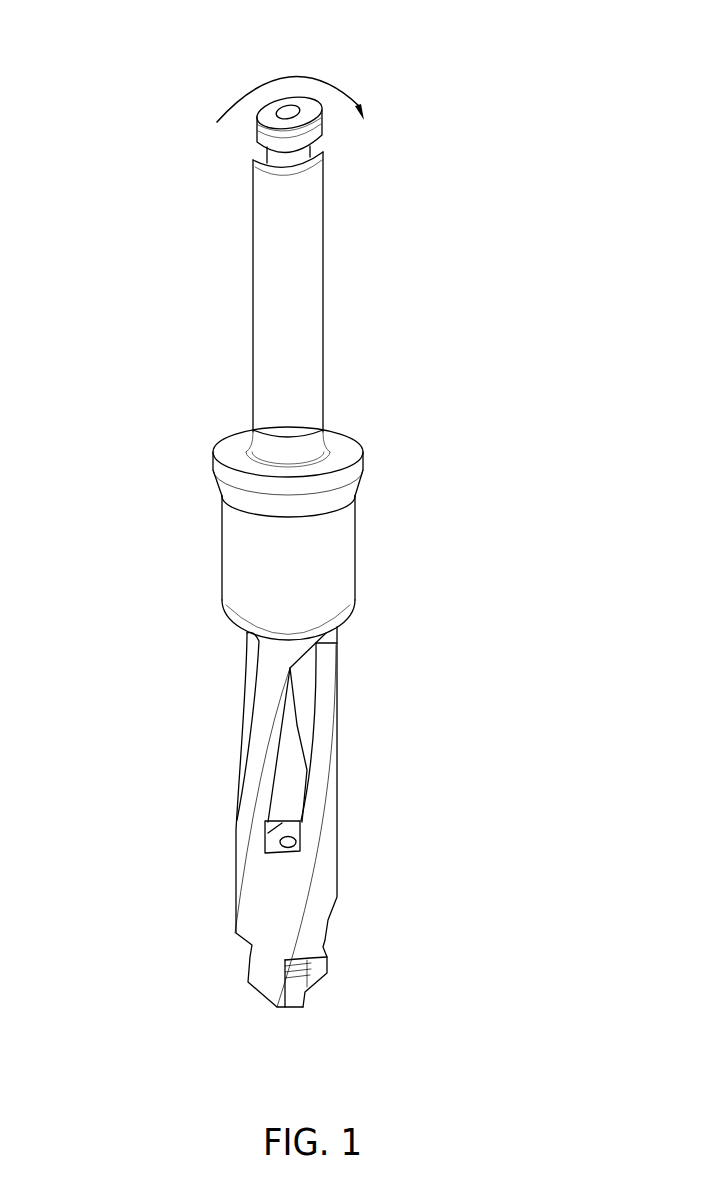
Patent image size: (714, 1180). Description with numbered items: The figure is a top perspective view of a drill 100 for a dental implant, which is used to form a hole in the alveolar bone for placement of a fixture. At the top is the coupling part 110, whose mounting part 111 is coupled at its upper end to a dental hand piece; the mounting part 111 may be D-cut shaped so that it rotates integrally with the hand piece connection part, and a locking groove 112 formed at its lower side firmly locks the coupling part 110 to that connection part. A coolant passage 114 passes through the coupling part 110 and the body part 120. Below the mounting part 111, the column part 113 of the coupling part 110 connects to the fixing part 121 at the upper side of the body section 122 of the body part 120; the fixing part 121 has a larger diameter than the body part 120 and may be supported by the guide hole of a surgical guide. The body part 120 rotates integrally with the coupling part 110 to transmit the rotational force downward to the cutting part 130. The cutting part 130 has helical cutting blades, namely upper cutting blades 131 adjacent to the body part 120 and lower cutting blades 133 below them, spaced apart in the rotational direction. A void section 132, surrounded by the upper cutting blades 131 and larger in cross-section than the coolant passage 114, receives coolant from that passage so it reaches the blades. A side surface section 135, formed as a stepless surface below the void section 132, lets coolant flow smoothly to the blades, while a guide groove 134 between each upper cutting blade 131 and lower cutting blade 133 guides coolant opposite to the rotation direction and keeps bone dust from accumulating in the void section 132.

The drill for a dental implant 100 is at (145, 143).
The coupling part 110 is at (362, 282).
The mounting part 111 is at (325, 127).
The locking groove 112 is at (296, 157).
The column part 113 is at (313, 357).
The coolant passage 114 is at (288, 110).
The body part 120 is at (372, 542).
The fixing part 121 is at (342, 465).
The body section 122 is at (243, 558).
The cutting part 130 is at (350, 868).
The upper cutting blades 131 is at (323, 805).
The void section 132 is at (305, 696).
The lower cutting blades 133 is at (308, 993).
The guide groove 134 is at (300, 967).
The side surface section 135 is at (275, 915).